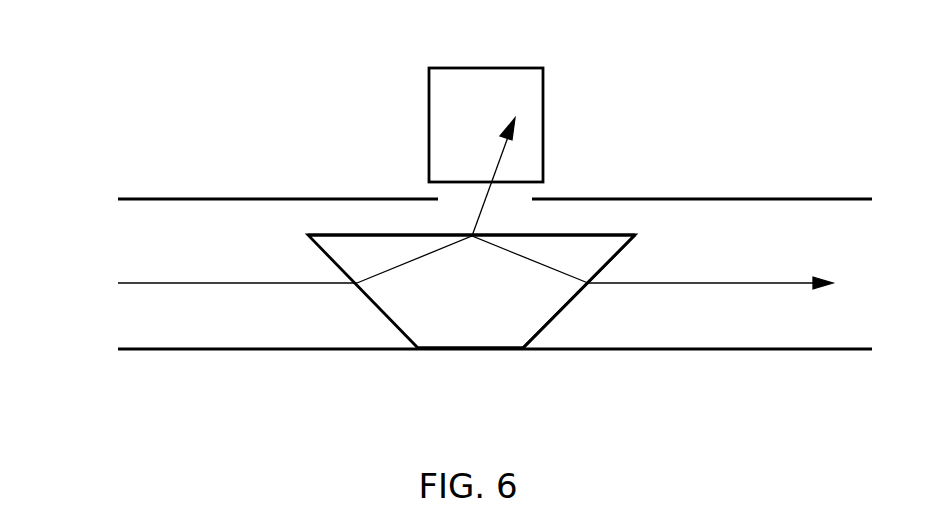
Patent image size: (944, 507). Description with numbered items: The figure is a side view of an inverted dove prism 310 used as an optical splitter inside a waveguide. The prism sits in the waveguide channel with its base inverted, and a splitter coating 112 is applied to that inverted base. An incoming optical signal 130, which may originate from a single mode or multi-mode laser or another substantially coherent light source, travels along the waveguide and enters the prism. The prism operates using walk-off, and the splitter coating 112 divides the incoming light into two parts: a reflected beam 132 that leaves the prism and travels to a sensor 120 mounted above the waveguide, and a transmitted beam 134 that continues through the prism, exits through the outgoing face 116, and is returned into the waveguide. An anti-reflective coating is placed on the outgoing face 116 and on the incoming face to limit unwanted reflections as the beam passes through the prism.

The splitter coating 112 is at (330, 233).
The outgoing face 116 is at (555, 318).
The sensor 120 is at (482, 68).
The optical signal 130 is at (150, 283).
The reflected beam 132 is at (493, 172).
The transmitted beam 134 is at (800, 283).
The inverted dove prism 310 is at (506, 333).